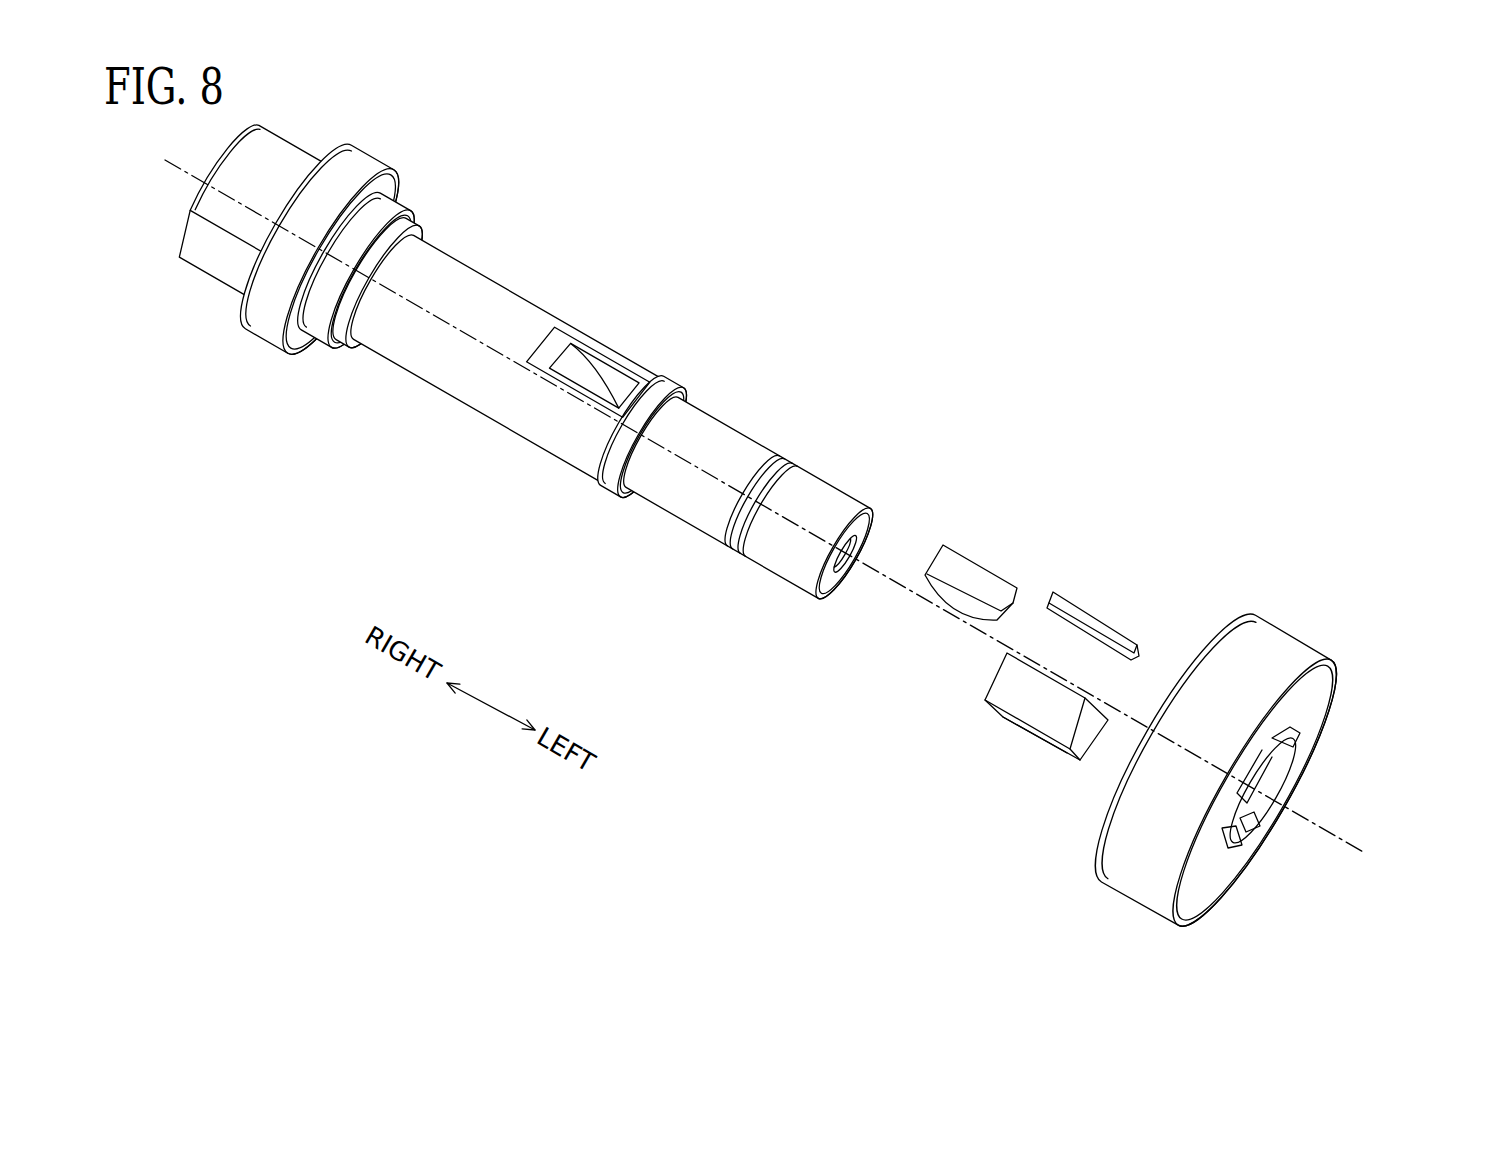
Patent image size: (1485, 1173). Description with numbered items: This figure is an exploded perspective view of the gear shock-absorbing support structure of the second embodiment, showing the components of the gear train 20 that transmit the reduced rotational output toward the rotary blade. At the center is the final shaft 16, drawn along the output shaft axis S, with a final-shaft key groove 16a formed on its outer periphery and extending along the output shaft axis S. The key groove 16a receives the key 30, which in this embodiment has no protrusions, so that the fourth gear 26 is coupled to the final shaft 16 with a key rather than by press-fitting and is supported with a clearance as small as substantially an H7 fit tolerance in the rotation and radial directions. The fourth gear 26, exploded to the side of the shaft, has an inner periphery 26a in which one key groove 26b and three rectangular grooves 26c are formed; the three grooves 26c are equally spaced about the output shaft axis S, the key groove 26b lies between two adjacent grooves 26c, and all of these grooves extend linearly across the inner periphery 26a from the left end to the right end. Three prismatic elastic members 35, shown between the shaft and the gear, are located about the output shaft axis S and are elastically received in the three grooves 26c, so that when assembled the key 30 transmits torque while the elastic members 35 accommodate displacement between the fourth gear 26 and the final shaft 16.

The final shaft 16 is at (478, 287).
The final-shaft key groove 16a is at (603, 386).
The gear train 20 is at (783, 348).
The fourth gear 26 is at (1291, 646).
The inner periphery 26a is at (1262, 776).
The key groove 26b is at (1268, 797).
The rectangular grooves 26c is at (1292, 750).
The key 30 is at (975, 573).
The elastic members 35 is at (1092, 617).
The output shaft axis S is at (775, 519).